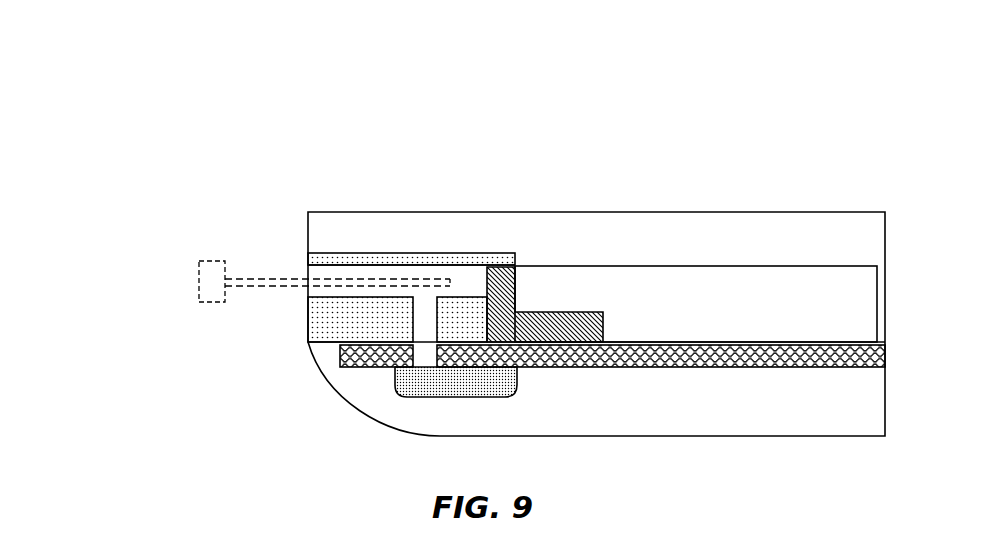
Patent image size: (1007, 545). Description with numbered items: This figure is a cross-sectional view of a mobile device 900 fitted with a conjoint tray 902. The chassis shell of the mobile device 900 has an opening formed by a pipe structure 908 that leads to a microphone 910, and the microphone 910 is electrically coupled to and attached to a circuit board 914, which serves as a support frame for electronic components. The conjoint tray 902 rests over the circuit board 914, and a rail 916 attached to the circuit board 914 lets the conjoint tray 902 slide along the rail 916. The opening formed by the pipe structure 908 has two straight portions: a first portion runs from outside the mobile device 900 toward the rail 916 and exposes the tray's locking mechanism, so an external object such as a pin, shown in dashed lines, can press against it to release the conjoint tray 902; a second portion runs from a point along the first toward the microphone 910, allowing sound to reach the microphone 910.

The mobile device 900 is at (98, 93).
The conjoint tray 902 is at (660, 308).
The pipe structure 908 is at (347, 330).
The microphone 910 is at (438, 397).
The circuit board 914 is at (648, 367).
The rail 916 is at (503, 290).